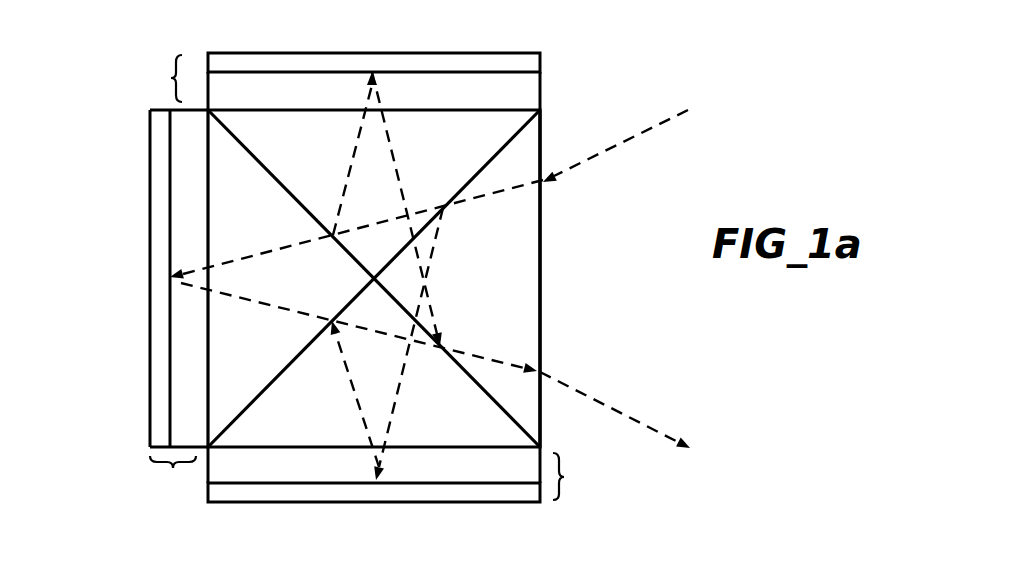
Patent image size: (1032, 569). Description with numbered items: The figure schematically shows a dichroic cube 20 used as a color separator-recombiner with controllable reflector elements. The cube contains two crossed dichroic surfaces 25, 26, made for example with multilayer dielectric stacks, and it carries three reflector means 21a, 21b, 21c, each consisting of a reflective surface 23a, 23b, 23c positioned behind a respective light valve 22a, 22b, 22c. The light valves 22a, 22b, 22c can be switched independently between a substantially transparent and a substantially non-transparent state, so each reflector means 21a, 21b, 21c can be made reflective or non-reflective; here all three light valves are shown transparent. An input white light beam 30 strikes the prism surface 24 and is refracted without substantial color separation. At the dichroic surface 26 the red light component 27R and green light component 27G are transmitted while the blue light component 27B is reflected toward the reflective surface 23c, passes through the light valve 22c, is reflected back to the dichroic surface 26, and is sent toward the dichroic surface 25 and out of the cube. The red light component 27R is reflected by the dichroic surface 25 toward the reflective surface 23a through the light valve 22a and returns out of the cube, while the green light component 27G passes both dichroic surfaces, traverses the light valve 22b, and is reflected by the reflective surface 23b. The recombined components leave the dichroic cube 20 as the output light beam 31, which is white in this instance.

The dichroic cube 20 is at (590, 223).
The reflector means 21a is at (170, 78).
The reflector means 21b is at (173, 470).
The reflector means 21c is at (564, 477).
The light valve 22a is at (457, 85).
The light valve 22b is at (185, 348).
The light valve 22c is at (462, 468).
The reflective surface 23a is at (331, 60).
The reflective surface 23b is at (155, 213).
The reflective surface 23c is at (330, 495).
The prism surface 24 is at (541, 132).
The dichroic surface 25 is at (257, 160).
The dichroic surface 26 is at (259, 397).
The red light component 27R is at (352, 167).
The green light component 27G is at (253, 290).
The blue light component 27B is at (358, 409).
The input white light beam 30 is at (660, 122).
The output light beam 31 is at (660, 432).